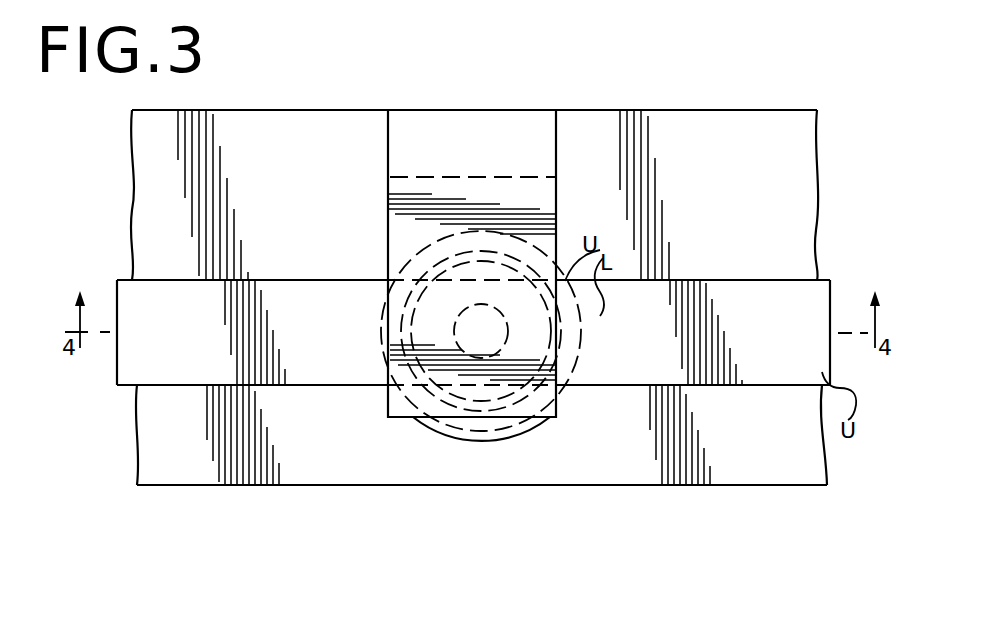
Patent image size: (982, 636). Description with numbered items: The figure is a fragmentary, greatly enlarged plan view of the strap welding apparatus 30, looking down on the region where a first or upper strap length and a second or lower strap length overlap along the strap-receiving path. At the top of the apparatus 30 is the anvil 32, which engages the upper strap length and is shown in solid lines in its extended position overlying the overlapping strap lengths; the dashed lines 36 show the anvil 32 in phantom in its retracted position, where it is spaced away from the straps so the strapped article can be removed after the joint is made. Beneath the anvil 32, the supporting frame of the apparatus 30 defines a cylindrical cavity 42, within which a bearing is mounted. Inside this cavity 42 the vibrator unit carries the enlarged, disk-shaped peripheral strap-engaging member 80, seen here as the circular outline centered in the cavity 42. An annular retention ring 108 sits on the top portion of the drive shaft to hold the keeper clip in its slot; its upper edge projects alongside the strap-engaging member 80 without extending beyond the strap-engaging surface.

The apparatus 30 is at (278, 502).
The anvil 32 is at (540, 420).
The dashed lines 36 is at (530, 178).
The cylindrical cavity 42 is at (468, 434).
The peripheral strap-engaging member 80 is at (420, 318).
The retention ring 108 is at (418, 420).